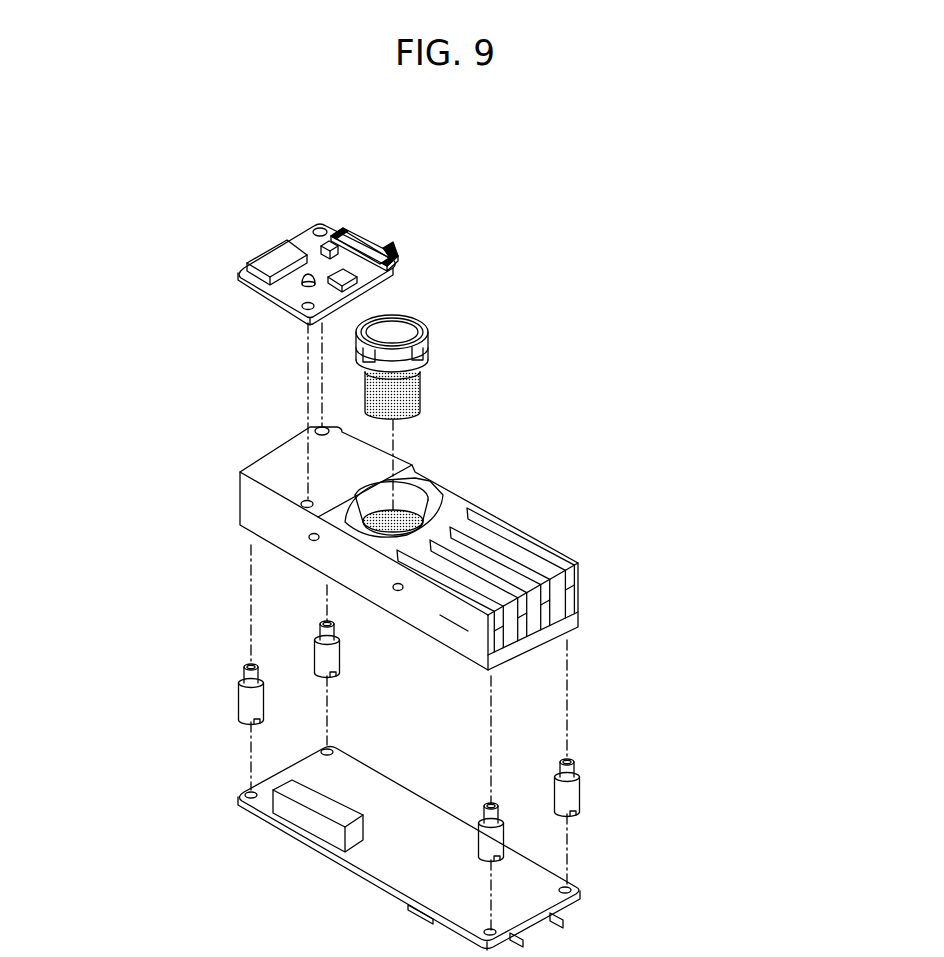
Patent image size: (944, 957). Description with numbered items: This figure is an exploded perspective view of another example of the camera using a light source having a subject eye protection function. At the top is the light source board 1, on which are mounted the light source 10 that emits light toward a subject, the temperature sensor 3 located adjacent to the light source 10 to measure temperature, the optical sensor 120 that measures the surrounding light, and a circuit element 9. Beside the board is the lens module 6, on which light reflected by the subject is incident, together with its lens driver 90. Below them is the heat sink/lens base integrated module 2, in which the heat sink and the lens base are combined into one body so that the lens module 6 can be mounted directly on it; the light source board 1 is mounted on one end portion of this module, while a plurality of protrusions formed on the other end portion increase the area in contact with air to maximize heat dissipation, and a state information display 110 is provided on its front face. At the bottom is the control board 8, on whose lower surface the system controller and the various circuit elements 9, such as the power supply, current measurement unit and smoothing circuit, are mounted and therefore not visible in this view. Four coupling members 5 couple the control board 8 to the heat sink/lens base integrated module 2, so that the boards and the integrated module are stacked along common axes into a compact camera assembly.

The light source board 1 is at (280, 222).
The temperature sensor 3 is at (328, 226).
The light source 10 is at (345, 273).
The circuit elements 9 is at (263, 257).
The optical sensor 120 is at (307, 280).
The lens module 6 is at (432, 304).
The heat sink/lens base integrated module 2 is at (582, 498).
The state information display 110 is at (393, 586).
The lens driver 90 is at (460, 655).
The coupling members 5 is at (247, 698).
The control board 8 is at (430, 880).